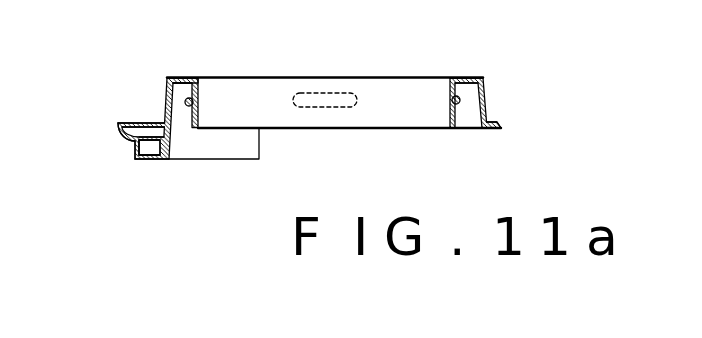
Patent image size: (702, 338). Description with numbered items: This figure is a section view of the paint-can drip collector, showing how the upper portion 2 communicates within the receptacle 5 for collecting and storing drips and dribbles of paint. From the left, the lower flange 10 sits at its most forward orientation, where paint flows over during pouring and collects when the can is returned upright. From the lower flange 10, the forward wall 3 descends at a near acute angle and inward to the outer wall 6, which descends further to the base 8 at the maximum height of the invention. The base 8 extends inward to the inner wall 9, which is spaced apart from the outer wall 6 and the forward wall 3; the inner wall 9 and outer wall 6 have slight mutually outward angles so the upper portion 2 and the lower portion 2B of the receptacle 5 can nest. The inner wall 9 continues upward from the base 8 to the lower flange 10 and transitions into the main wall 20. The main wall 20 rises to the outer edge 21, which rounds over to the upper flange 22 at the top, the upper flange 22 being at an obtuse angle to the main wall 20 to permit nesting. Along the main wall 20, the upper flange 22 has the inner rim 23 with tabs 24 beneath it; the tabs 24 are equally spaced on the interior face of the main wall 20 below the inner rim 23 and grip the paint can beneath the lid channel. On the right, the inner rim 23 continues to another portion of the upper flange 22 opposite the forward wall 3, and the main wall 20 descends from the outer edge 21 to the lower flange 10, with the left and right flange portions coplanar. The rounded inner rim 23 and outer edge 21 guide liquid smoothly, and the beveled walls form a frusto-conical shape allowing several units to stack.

The upper portion 2 is at (136, 123).
The forward wall 3 is at (119, 134).
The receptacle 5 is at (150, 138).
The outer wall 6 is at (135, 151).
The base 8 is at (147, 159).
The inner wall 9 is at (212, 148).
The lower flange 10 is at (497, 128).
The main wall 20 is at (165, 95).
The outer edge 21 is at (167, 77).
The upper flange 22 is at (462, 78).
The inner rim 23 is at (388, 77).
The tabs 24 is at (196, 102).
The lower portion 2B is at (148, 145).